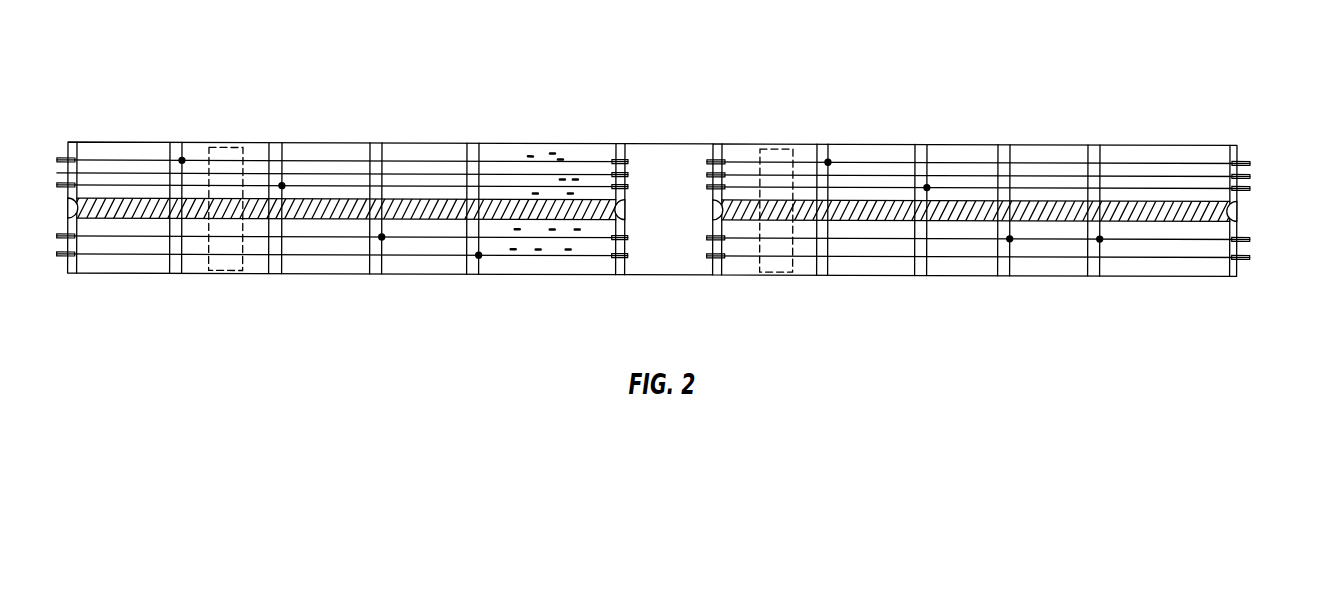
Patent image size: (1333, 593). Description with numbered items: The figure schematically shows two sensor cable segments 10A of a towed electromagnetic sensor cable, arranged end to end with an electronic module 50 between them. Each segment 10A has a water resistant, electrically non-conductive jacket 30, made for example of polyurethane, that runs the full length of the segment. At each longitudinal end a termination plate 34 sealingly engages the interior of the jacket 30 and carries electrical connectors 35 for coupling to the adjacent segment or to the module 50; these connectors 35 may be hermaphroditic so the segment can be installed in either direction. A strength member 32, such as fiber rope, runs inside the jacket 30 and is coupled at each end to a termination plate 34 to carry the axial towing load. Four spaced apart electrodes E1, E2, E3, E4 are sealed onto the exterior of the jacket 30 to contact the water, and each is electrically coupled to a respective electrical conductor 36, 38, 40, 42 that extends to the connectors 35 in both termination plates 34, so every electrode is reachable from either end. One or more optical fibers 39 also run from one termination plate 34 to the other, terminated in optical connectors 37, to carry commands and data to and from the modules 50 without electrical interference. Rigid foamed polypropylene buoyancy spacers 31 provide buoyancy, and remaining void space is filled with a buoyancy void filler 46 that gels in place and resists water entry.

The sensor cable segment 10A is at (262, 69).
The jacket 30 is at (227, 270).
The buoyancy spacer 31 is at (227, 150).
The strength member 32 is at (131, 220).
The termination plate 34 is at (77, 153).
The electrical connector 35 is at (57, 254).
The electrical conductor 36 is at (315, 160).
The optical connector 37 is at (628, 173).
The electrical conductor 38 is at (408, 185).
The optical fiber 39 is at (515, 173).
The electrical conductor 40 is at (423, 238).
The electrical conductor 42 is at (513, 257).
The buoyancy void filler 46 is at (563, 248).
The electronic module 50 is at (668, 247).
The electrode E1 is at (173, 142).
The electrode E2 is at (273, 142).
The electrode E3 is at (375, 142).
The electrode E4 is at (471, 142).